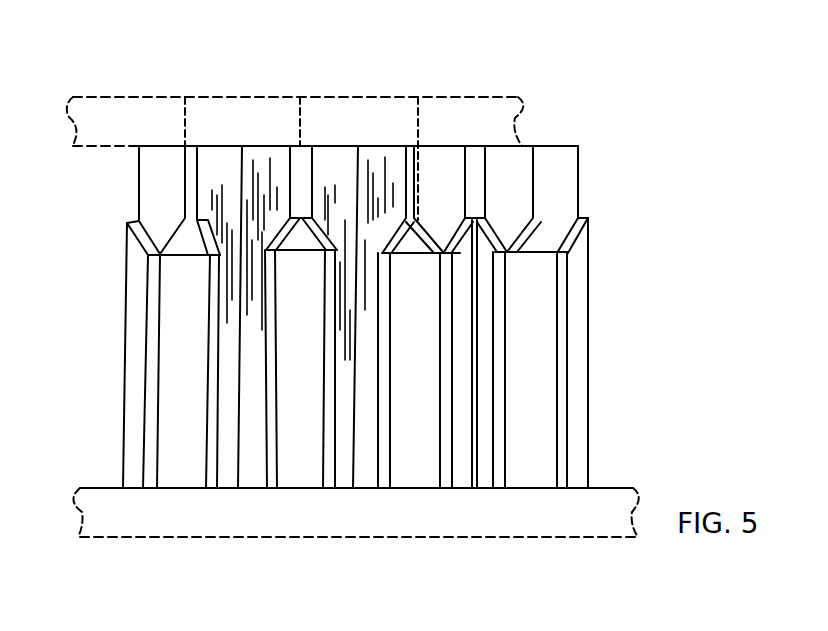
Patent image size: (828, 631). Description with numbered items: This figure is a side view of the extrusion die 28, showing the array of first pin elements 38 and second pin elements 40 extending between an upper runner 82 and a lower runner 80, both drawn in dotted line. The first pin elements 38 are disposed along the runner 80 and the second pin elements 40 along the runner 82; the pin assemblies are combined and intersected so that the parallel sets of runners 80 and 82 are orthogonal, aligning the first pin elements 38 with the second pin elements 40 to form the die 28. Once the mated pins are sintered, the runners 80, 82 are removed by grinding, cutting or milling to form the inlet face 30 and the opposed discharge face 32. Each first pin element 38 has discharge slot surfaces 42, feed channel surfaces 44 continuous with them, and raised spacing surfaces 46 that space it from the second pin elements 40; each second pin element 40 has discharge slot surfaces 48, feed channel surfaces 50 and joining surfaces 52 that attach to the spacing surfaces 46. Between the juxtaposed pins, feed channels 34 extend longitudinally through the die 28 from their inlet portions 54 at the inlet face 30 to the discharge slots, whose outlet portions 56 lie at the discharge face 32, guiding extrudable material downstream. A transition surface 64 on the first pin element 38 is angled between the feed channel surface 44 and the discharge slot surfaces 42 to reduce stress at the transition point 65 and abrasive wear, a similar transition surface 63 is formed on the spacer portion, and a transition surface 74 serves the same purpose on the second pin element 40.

The extrusion die 28 is at (598, 56).
The inlet face 30 is at (231, 490).
The discharge face 32 is at (163, 144).
The feed channels 34 is at (309, 480).
The first pin element 38 is at (569, 132).
The second pin element 40 is at (261, 134).
The discharge slot surface 42 is at (572, 179).
The feed channel surface 44 is at (537, 363).
The spacing surface 46 is at (578, 301).
The discharge slot surface 48 is at (224, 160).
The feed channel surface 50 is at (261, 468).
The joining surface 52 is at (262, 386).
The inlet portion 54 is at (292, 462).
The outlet portion 56 is at (300, 156).
The transition surface 63 is at (491, 237).
The transition surface 64 is at (533, 235).
The transition point 65 is at (545, 253).
The transition surface 74 is at (202, 237).
The runner 80 is at (496, 538).
The runner 82 is at (488, 96).